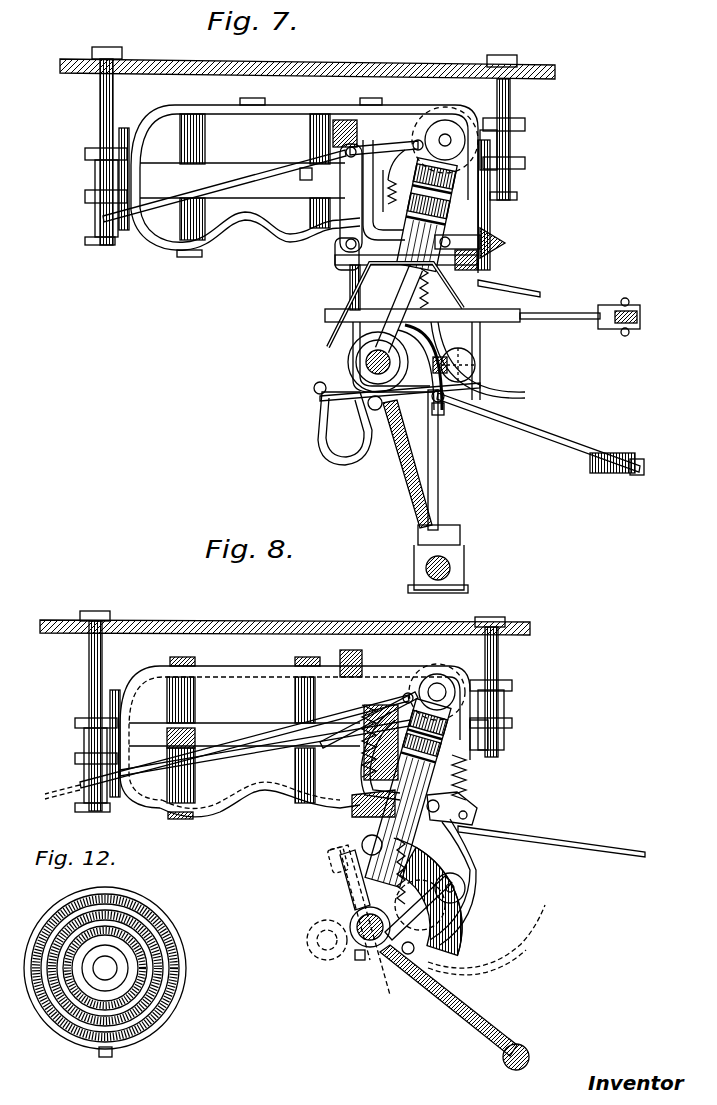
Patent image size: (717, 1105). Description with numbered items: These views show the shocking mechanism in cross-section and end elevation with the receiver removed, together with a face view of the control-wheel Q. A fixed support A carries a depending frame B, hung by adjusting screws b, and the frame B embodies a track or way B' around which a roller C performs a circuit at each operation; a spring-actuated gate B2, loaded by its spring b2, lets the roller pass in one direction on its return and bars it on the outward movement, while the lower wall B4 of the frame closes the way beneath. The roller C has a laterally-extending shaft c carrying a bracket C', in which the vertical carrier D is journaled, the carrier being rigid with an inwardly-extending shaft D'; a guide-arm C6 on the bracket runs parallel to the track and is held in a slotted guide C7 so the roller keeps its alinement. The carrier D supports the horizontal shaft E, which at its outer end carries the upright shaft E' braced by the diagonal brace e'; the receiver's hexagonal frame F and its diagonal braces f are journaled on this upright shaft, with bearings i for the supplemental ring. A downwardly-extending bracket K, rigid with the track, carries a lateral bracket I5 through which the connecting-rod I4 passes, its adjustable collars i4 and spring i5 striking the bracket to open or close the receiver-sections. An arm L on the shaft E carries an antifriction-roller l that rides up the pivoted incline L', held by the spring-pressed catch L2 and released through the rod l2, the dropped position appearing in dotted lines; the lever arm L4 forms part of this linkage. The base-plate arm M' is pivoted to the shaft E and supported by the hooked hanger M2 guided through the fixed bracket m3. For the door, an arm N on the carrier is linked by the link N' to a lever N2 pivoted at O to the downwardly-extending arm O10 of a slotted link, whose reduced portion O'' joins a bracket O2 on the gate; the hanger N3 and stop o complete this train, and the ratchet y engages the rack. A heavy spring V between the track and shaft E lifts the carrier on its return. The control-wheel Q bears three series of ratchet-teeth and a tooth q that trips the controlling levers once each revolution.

In FIG. 7, the support A is at (163, 60).
In FIG. 8, the support A is at (188, 621).
In FIG. 7, the screws b is at (100, 100).
In FIG. 8, the screws b is at (89, 670).
In FIG. 7, the depending frame B is at (304, 179).
In FIG. 7, the track or way B' is at (151, 94).
In FIG. 8, the track or way B' is at (295, 725).
In FIG. 7, the spring-actuated gate B2 is at (352, 140).
In FIG. 8, the spring-actuated gate B2 is at (370, 690).
In FIG. 7, the tank bottom B4 is at (255, 232).
In FIG. 8, the tank bottom B4 is at (245, 800).
In FIG. 7, the spring b2 is at (333, 130).
In FIG. 7, the roller C is at (417, 217).
In FIG. 8, the roller C is at (408, 764).
In FIG. 7, the bracket or arm C' is at (484, 200).
In FIG. 8, the bracket or arm C' is at (471, 696).
In FIG. 7, the guide-arm C6 is at (246, 182).
In FIG. 8, the guide-arm C6 is at (234, 738).
In FIG. 7, the slotted guide C7 is at (129, 170).
In FIG. 8, the slotted guide C7 is at (120, 736).
In FIG. 7, the laterally-extending shaft c is at (450, 136).
In FIG. 8, the laterally-extending shaft c is at (447, 682).
In FIG. 7, the carrier D is at (419, 244).
In FIG. 8, the carrier D is at (345, 920).
In FIG. 8, the inwardly-extending shaft D' is at (342, 842).
In FIG. 7, the horizontal shaft E is at (364, 357).
In FIG. 8, the horizontal shaft E is at (362, 947).
In FIG. 7, the upwardly-extending shaft E' is at (401, 321).
In FIG. 8, the upwardly-extending shaft E' is at (307, 940).
In FIG. 7, the diagonal brace e' is at (327, 254).
In FIG. 7, the hexagonal frame F is at (345, 268).
In FIG. 7, the diagonal braces f is at (352, 305).
In FIG. 7, the connecting-rod I4 is at (530, 452).
In FIG. 7, the bracket I5 is at (440, 402).
In FIG. 7, the adjustable collars i4 is at (383, 452).
In FIG. 7, the spring i5 is at (600, 458).
In FIG. 8, the bearings i is at (408, 871).
In FIG. 7, the downwardly-extending bracket or support K is at (470, 305).
In FIG. 8, the downwardly-extending bracket or support K is at (458, 948).
In FIG. 7, the arm L is at (478, 355).
In FIG. 8, the arm L is at (447, 905).
In FIG. 7, the incline L' is at (511, 383).
In FIG. 8, the incline L' is at (486, 940).
In FIG. 7, the spring-pressed catch L2 is at (502, 243).
In FIG. 8, the spring-pressed catch L2 is at (475, 800).
In FIG. 8, the lever arm L4 is at (474, 838).
In FIG. 7, the antifriction-roller l is at (455, 352).
In FIG. 8, the antifriction-roller l is at (466, 885).
In FIG. 7, the rod l2 is at (517, 281).
In FIG. 8, the rod l2 is at (551, 833).
In FIG. 7, the arm M' is at (413, 496).
In FIG. 8, the arm M' is at (454, 1007).
In FIG. 7, the hooked hanger M2 is at (456, 460).
In FIG. 7, the fixed bracket m3 is at (495, 404).
In FIG. 7, the upwardly-extending arm N is at (330, 287).
In FIG. 7, the link N' is at (408, 144).
In FIG. 7, the lever N2 is at (345, 290).
In FIG. 7, the hanging weight N3 is at (322, 450).
In FIG. 7, the pivotal connection O is at (354, 415).
In FIG. 7, the reduced portion O'' is at (560, 304).
In FIG. 7, the bracket O2 is at (605, 305).
In FIG. 7, the downwardly-extending arm O10 is at (314, 388).
In FIG. 7, the stop bar o is at (486, 316).
In FIG. 8, the spring V is at (362, 750).
In FIG. 7, the ratchet y is at (430, 289).
In FIG. 12, the control-wheel Q is at (186, 950).
In FIG. 12, the projection or tooth q is at (107, 1058).